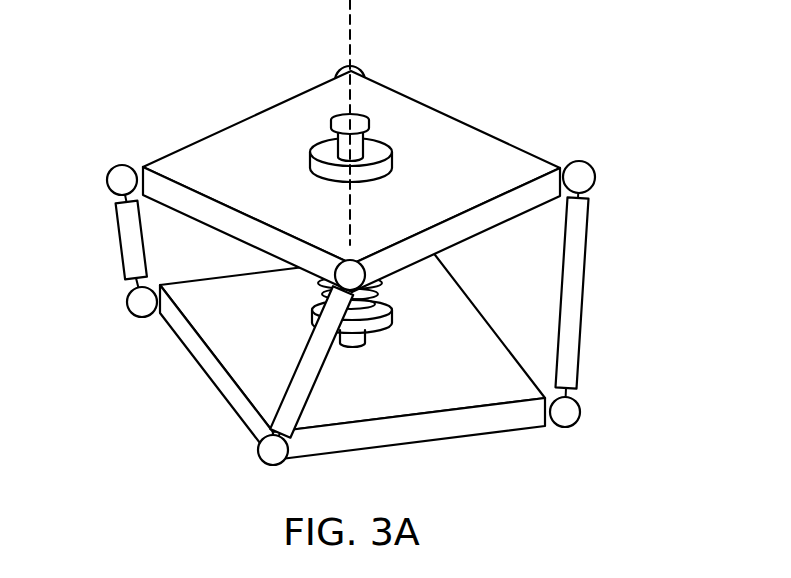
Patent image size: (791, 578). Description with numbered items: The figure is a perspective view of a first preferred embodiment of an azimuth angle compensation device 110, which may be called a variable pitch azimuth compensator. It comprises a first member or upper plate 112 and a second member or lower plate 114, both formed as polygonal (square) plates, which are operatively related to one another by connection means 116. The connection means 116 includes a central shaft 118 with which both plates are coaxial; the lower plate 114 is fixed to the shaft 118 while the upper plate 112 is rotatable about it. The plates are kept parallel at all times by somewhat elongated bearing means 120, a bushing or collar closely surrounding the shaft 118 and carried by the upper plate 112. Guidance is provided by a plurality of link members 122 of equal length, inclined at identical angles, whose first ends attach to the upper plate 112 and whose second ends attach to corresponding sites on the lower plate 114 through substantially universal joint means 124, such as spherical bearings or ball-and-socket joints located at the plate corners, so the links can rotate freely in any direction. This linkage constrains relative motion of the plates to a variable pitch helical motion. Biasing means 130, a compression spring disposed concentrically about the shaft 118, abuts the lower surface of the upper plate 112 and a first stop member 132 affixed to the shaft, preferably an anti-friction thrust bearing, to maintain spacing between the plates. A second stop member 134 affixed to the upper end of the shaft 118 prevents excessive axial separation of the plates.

The azimuth angle compensation device 110 is at (636, 121).
The first member (upper plate) 112 is at (475, 138).
The second member (lower plate) 114 is at (404, 394).
The connection means 116 is at (628, 259).
The central shaft 118 is at (338, 140).
The bearing means 120 is at (383, 170).
The link member 122 is at (130, 256).
The universal joint means 124 is at (108, 176).
The biasing means (compression spring) 130 is at (398, 326).
The first stop member 132 is at (314, 318).
The second stop member 134 is at (362, 127).